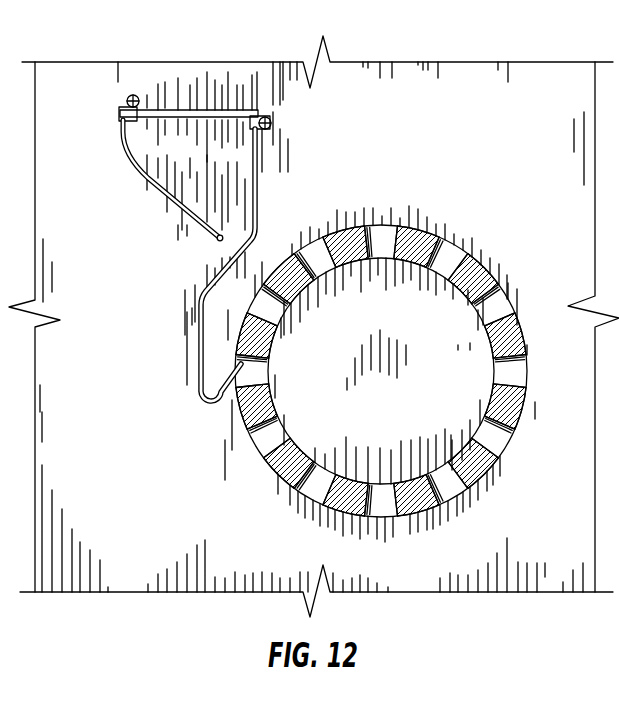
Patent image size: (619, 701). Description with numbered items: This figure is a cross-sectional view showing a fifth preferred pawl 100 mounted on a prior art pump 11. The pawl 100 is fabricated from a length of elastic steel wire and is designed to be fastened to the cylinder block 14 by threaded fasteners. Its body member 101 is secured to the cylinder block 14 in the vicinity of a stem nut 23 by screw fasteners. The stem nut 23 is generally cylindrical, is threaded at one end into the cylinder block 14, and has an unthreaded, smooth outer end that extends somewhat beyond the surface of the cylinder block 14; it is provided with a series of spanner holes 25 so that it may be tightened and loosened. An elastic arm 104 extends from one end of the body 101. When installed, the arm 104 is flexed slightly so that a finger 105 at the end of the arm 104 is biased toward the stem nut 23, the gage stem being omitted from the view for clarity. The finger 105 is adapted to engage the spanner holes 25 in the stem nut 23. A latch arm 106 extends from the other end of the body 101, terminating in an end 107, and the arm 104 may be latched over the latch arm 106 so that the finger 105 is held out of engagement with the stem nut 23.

The wall structure 11 is at (464, 60).
The cylinder block 14 is at (495, 161).
The stem nut 23 is at (387, 348).
The spanner holes 25 is at (393, 234).
The pawl 100 is at (218, 209).
The body member 101 is at (182, 110).
The elastic arm 104 is at (197, 342).
The finger 105 is at (260, 364).
The latch arm 106 is at (163, 192).
The wire end 107 is at (216, 240).